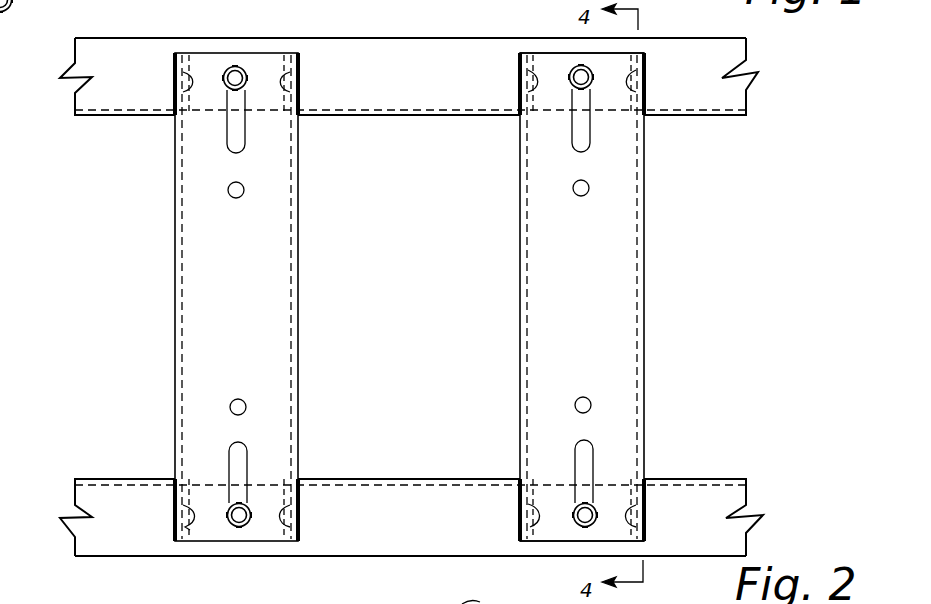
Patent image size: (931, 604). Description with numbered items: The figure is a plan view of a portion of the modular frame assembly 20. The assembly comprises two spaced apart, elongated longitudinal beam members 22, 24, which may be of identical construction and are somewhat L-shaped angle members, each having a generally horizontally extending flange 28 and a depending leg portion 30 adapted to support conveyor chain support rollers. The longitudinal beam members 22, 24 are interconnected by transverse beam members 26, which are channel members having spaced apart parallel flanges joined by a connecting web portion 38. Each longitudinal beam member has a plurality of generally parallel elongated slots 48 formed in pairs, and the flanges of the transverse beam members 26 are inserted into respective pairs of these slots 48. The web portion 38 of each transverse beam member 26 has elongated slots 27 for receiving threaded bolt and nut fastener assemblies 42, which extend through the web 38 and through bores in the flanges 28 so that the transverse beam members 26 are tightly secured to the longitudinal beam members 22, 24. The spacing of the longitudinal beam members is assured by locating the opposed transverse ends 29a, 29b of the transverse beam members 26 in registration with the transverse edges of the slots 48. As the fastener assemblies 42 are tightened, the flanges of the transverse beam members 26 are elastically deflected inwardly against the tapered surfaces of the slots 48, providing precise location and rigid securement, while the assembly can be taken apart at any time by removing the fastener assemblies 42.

The modular frame assembly 20 is at (722, 198).
The longitudinal beam member 22 is at (408, 55).
The longitudinal beam member 24 is at (380, 547).
The transverse beam member 26 is at (298, 250).
The elongated slot 27 is at (240, 147).
The flange 28 is at (437, 38).
The transverse end 29a is at (555, 53).
The transverse end 29b is at (535, 541).
The depending leg portion 30 is at (338, 116).
The web portion 38 is at (677, 326).
The threaded bolt and nut assembly 42 is at (240, 78).
The elongated slot 48 is at (518, 93).